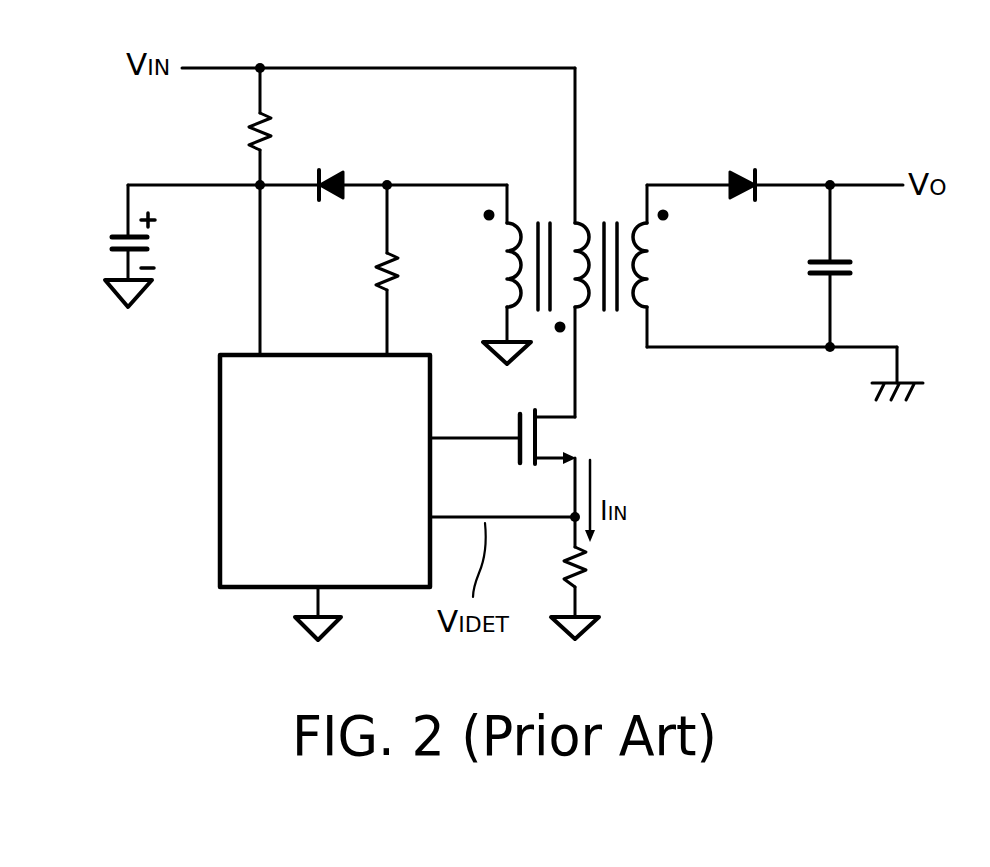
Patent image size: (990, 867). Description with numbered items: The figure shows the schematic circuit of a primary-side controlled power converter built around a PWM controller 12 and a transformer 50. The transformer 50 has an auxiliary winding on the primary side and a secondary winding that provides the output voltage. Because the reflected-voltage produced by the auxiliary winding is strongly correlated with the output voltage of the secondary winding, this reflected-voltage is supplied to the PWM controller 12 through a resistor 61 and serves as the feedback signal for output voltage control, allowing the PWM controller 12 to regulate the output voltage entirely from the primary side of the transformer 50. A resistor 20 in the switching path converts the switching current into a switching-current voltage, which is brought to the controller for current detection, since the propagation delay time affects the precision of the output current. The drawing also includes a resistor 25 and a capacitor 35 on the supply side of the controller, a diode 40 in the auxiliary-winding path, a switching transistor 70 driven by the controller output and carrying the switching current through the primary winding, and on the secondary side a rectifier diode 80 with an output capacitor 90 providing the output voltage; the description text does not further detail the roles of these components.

The PWM controller 12 is at (218, 429).
The resistor 20 is at (597, 566).
The start-up resistor 25 is at (243, 130).
The supply capacitor 35 is at (106, 241).
The diode 40 is at (326, 166).
The transformer 50 is at (592, 200).
The resistor 61 is at (373, 274).
The power switch (MOSFET) 70 is at (579, 438).
The output rectifier diode 80 is at (738, 166).
The output capacitor 90 is at (855, 268).